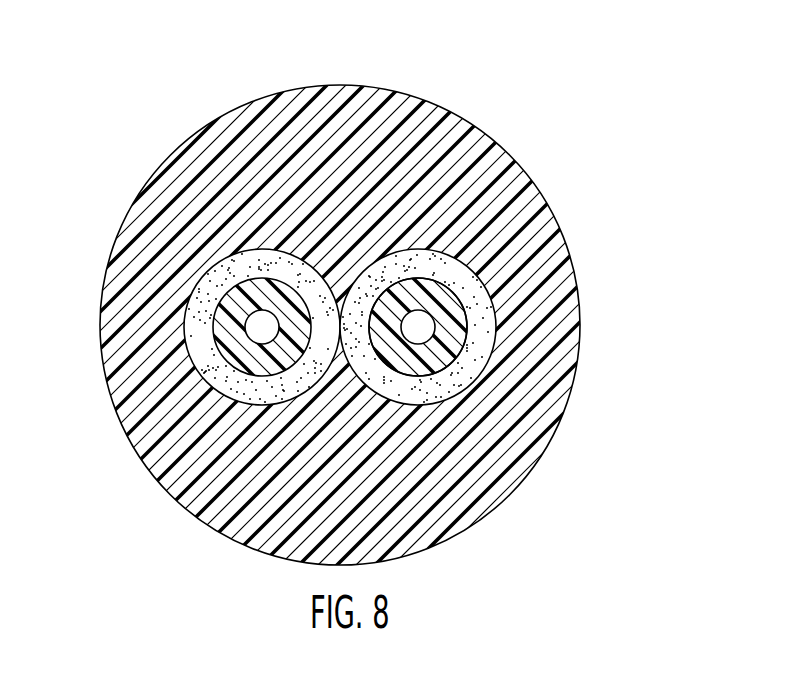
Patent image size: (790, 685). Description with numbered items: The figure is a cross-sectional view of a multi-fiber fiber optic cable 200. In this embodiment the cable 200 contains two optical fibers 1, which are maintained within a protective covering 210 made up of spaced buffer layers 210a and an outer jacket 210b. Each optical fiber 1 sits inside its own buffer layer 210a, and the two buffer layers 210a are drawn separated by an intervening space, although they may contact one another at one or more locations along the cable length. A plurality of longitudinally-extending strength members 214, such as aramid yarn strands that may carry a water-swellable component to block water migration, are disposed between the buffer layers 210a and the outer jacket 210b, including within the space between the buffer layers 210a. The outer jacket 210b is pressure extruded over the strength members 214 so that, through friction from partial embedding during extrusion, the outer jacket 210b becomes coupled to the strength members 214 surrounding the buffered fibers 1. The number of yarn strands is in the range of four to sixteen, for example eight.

The fiber optic cable 200 is at (367, 68).
The optical fiber 1 is at (413, 312).
The protective covering 210 is at (374, 318).
The buffer layer 210a is at (443, 282).
The outer jacket 210b is at (540, 297).
The strength member 214 is at (455, 362).